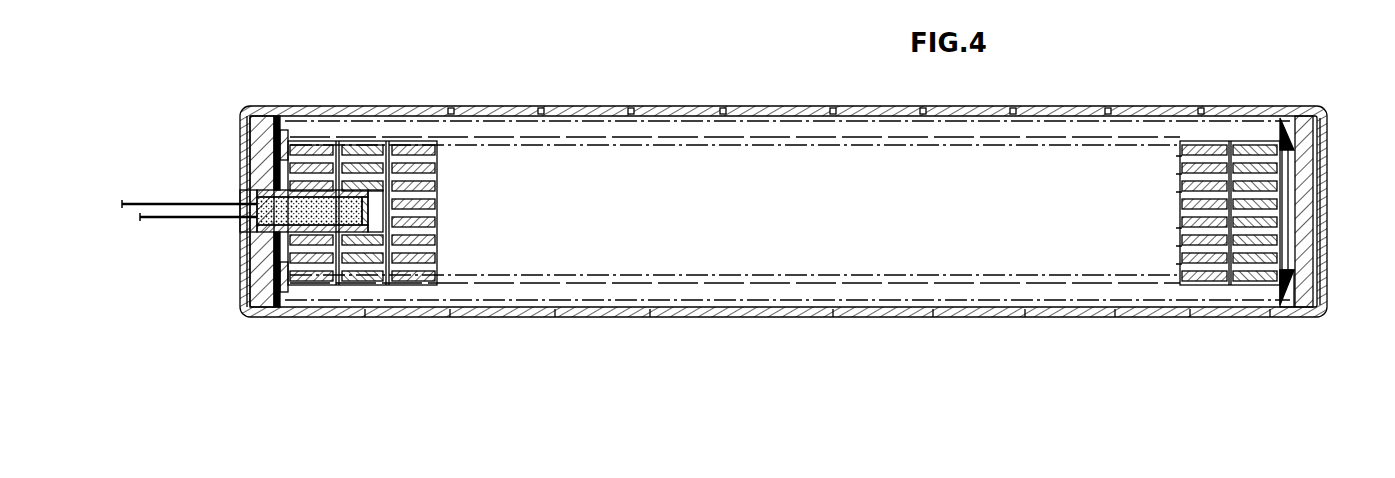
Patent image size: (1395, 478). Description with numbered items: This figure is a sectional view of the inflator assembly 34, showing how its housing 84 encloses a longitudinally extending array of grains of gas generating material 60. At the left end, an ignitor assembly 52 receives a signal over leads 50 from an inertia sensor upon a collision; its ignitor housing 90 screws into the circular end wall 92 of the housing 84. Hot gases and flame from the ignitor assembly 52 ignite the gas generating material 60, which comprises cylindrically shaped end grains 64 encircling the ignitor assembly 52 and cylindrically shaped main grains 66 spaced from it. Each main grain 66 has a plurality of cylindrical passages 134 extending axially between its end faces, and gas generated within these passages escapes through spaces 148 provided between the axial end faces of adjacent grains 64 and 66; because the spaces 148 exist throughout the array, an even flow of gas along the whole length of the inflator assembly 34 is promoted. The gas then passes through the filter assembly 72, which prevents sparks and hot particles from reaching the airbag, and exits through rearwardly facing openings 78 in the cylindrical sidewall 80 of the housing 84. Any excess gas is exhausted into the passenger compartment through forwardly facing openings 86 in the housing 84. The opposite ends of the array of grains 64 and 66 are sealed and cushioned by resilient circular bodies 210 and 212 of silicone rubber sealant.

The inflator assembly 34 is at (1222, 62).
The leads 50 is at (172, 204).
The ignitor assembly 52 is at (243, 181).
The gas generating material 60 is at (443, 158).
The end grains 64 is at (363, 140).
The main grains 66 is at (413, 140).
The filter assembly 72 is at (702, 130).
The rearwardly facing openings 78 is at (1012, 106).
The cylindrical sidewall 80 is at (785, 104).
The inflator housing 84 is at (1327, 108).
The forwardly facing openings 86 is at (550, 317).
The ignitor housing 90 is at (250, 232).
The circular end wall 92 is at (257, 270).
The cylindrical passages 134 is at (1180, 158).
The spaces 148 is at (337, 285).
The resilient circular body 210 is at (280, 317).
The resilient circular body 212 is at (1268, 315).